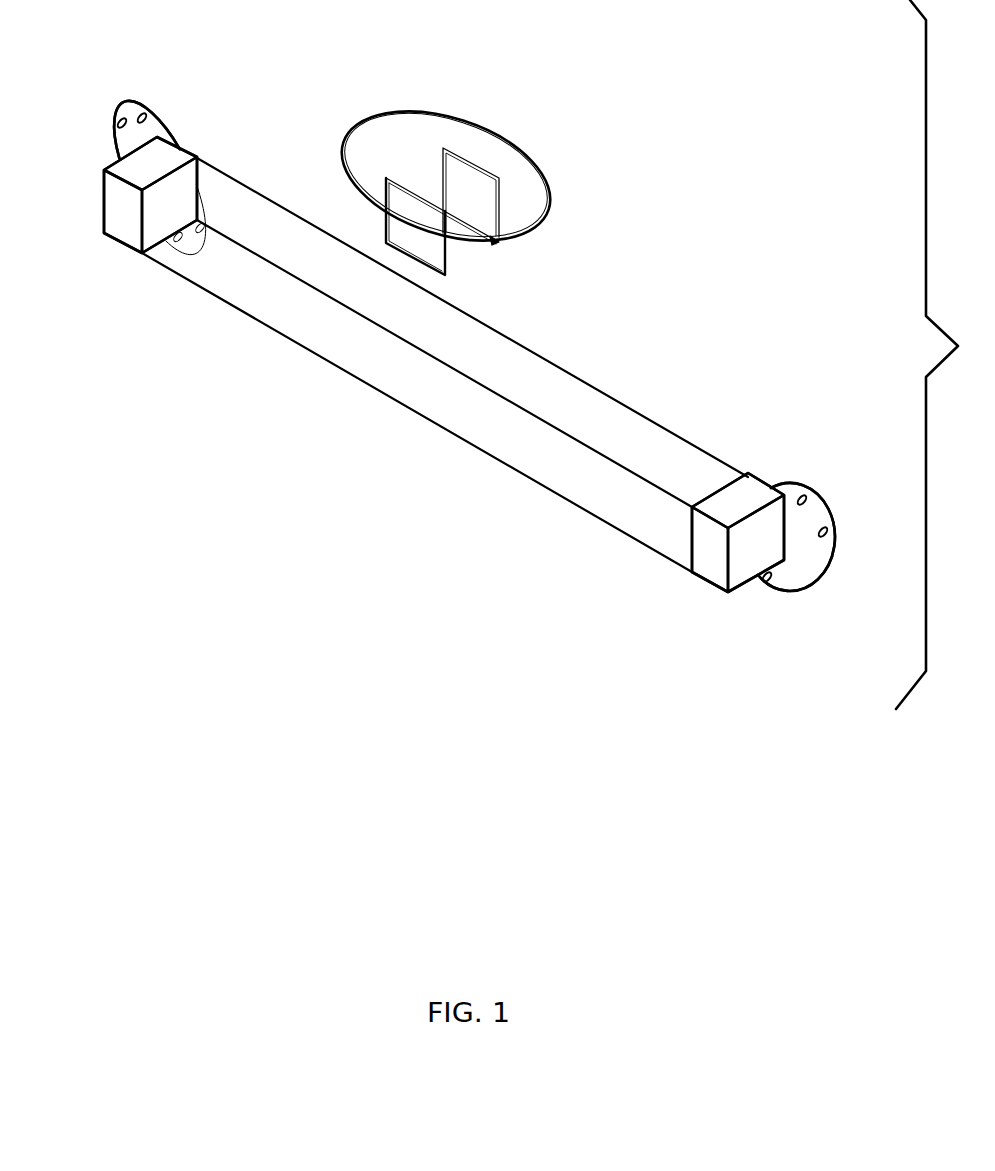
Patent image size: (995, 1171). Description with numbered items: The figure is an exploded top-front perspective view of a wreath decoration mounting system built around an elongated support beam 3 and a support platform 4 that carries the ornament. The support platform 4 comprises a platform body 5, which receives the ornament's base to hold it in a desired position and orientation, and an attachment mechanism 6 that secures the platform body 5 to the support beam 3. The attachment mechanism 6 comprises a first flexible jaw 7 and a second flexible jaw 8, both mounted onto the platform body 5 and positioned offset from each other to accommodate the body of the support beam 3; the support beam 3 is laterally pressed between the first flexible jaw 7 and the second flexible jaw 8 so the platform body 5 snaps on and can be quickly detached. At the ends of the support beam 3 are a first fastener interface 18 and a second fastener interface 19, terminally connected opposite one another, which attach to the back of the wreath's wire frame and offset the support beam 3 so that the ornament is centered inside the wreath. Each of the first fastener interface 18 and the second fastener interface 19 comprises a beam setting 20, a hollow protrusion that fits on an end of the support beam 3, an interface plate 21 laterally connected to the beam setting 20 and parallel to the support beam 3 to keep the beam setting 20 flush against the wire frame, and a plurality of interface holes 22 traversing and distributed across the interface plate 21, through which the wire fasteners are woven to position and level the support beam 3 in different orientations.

The support beam 3 is at (593, 405).
The support platform 4 is at (478, 187).
The platform body 5 is at (357, 133).
The attachment mechanism 6 is at (456, 187).
The first flexible jaw 7 is at (437, 253).
The second flexible jaw 8 is at (466, 168).
The first fastener interface 18 is at (107, 79).
The second fastener interface 19 is at (800, 641).
The beam setting 20 is at (128, 238).
The interface plate 21 is at (463, 343).
The plurality of interface holes 22 is at (148, 109).